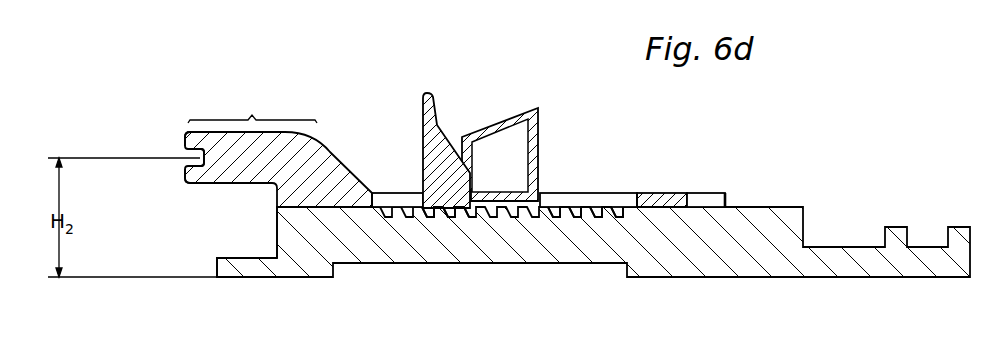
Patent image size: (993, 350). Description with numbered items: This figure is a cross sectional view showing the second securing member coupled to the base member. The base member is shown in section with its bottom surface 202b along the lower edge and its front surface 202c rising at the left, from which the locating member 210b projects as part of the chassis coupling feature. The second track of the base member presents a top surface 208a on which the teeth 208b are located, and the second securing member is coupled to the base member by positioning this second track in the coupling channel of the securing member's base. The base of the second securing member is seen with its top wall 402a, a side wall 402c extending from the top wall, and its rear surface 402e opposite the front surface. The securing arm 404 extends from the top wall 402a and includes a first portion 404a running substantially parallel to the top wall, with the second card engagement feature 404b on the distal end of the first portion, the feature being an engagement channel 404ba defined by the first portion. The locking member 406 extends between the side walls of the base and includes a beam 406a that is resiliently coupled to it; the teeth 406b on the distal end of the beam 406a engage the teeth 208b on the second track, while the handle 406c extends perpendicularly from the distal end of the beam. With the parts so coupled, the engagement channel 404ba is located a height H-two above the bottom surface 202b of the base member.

The bottom surface 202b is at (315, 278).
The front surface 202c is at (277, 233).
The locating member 210b is at (217, 264).
The top surface 208a is at (362, 193).
The teeth 208b is at (582, 193).
The top wall 402a is at (662, 192).
The side wall 402c is at (710, 192).
The rear surface 402e is at (727, 196).
The securing arm 404 is at (328, 150).
The first portion 404a is at (252, 111).
The second card engagement feature 404b is at (169, 147).
The engagement channel 404ba is at (185, 167).
The locking member 406 is at (500, 124).
The beam 406a is at (510, 196).
The teeth 406b is at (437, 213).
The handle 406c is at (430, 92).